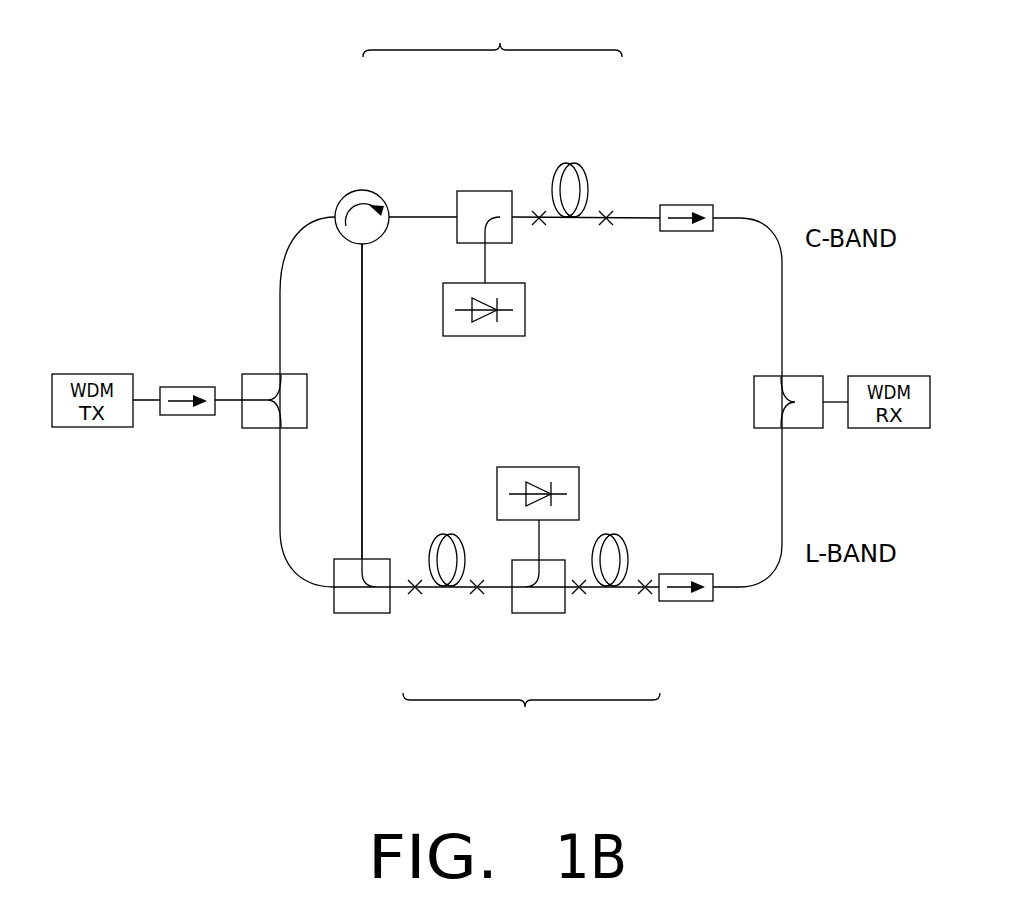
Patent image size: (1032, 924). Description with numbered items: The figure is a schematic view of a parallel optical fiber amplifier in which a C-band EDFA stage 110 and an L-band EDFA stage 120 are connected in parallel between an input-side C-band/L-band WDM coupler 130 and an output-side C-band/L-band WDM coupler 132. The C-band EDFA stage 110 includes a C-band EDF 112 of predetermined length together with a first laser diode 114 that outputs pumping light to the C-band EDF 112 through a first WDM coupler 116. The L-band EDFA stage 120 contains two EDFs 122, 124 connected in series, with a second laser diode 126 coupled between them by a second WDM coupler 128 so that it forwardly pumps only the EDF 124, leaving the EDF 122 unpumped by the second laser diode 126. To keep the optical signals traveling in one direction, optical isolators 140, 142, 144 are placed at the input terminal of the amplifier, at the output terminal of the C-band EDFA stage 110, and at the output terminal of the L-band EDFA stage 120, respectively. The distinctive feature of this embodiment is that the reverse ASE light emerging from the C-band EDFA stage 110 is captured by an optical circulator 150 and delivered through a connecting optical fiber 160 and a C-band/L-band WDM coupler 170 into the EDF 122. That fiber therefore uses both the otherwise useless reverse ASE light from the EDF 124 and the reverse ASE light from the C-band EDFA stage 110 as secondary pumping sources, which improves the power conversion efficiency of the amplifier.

The C-band EDFA stage 110 is at (492, 38).
The C-band EDF 112 is at (570, 163).
The first laser diode 114 is at (525, 308).
The first WDM coupler 116 is at (485, 191).
The L-band EDFA stage 120 is at (531, 714).
The EDF 122 is at (447, 534).
The EDF 124 is at (610, 534).
The second laser diode 126 is at (545, 467).
The second WDM coupler 128 is at (523, 613).
The C-band/L-band WDM coupler 130 is at (268, 428).
The C-band/L-band WDM coupler 132 is at (792, 376).
The optical isolator 140 is at (191, 415).
The optical isolator 142 is at (690, 205).
The optical isolator 144 is at (688, 602).
The optical circulator 150 is at (360, 190).
The connecting optical fiber 160 is at (362, 390).
The C-band/L-band WDM coupler 170 is at (361, 613).